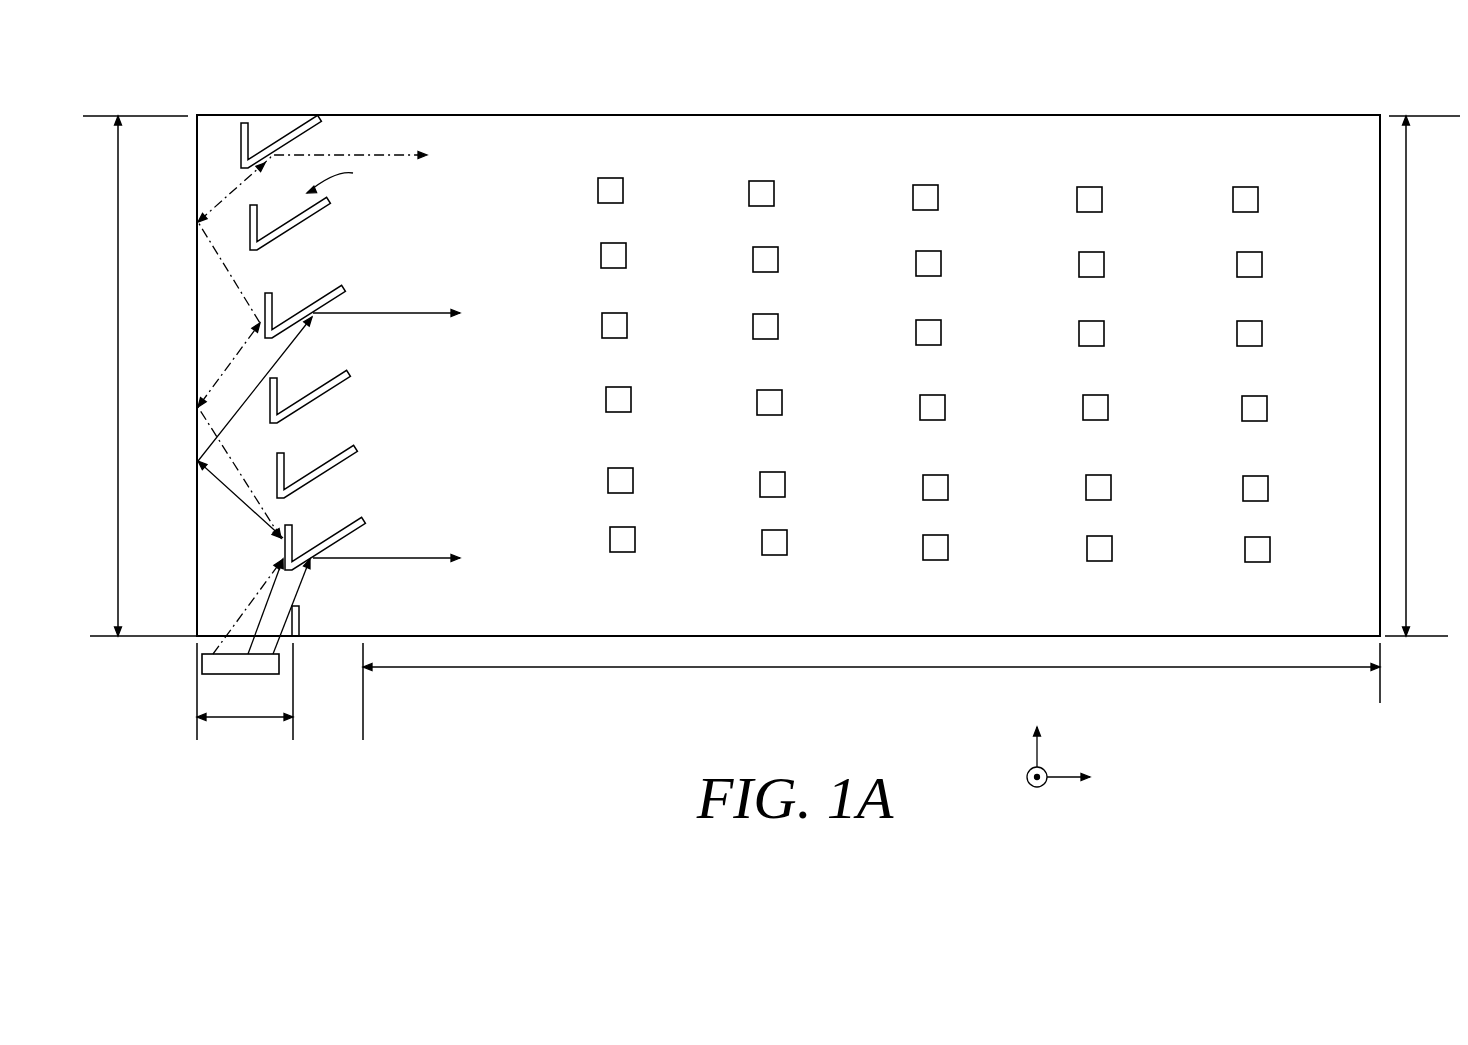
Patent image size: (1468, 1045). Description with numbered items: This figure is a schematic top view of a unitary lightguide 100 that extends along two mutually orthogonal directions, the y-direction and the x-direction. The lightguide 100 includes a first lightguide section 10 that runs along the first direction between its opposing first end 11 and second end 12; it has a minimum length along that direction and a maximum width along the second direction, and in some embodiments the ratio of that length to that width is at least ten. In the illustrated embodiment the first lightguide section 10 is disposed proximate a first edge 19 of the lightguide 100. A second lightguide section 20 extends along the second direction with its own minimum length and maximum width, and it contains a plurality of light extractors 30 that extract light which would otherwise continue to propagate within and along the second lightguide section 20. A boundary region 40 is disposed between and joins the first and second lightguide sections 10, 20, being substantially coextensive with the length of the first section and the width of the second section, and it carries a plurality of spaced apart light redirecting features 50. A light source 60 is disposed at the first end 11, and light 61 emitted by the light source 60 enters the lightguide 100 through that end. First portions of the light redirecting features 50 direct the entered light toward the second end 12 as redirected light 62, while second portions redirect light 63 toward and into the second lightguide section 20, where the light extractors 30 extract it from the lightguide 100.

The first lightguide section 10 is at (213, 575).
The first end 11 is at (208, 642).
The second end 12 is at (225, 115).
The first edge 19 is at (197, 173).
The second lightguide section 20 is at (788, 132).
The light extractors 30 is at (1102, 200).
The boundary region 40 is at (277, 127).
The light redirecting features 50 is at (349, 178).
The light source 60 is at (212, 675).
The light 61 is at (277, 642).
The redirected light 62 is at (227, 493).
The light 63 is at (257, 380).
The lightguide 100 is at (1305, 707).